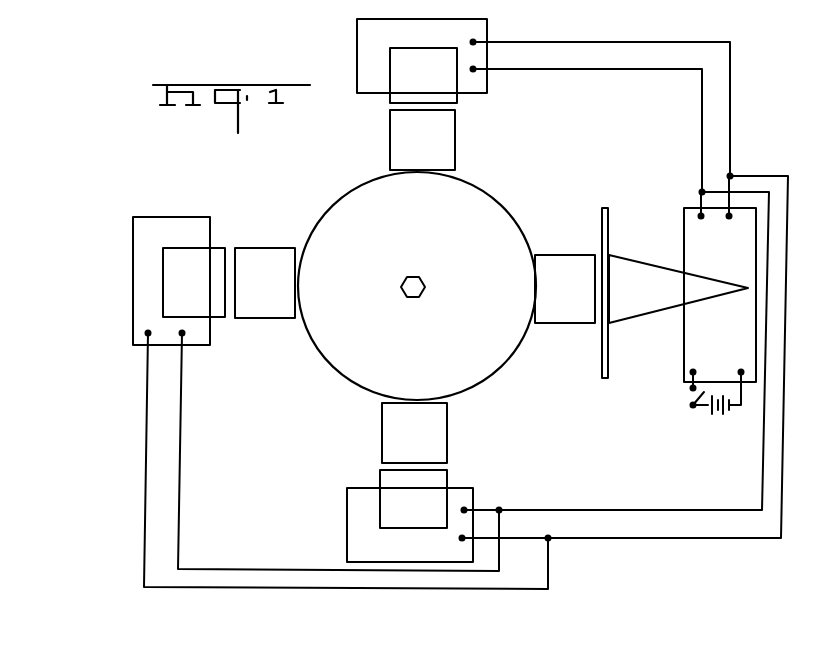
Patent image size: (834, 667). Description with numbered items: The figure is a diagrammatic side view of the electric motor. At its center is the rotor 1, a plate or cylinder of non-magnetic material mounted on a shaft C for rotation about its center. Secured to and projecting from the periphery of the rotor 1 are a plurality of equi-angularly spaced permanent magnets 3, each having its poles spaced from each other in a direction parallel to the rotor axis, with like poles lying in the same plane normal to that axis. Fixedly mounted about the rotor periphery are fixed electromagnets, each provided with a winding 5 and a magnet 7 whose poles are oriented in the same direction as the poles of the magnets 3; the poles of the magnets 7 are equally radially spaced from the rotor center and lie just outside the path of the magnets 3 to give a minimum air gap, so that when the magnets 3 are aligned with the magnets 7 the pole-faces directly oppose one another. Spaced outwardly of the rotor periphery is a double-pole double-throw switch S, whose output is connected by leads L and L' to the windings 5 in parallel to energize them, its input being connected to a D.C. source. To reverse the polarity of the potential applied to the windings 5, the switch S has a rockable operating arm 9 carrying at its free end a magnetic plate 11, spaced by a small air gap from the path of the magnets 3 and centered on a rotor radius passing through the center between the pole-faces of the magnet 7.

The rotor 1 is at (503, 204).
The permanent magnets 3 is at (452, 150).
The winding 5 is at (344, 87).
The magnet 7 is at (405, 90).
The rockable operating arm 9 is at (645, 274).
The magnetic plate 11 is at (610, 222).
The shaft C is at (426, 286).
The double-pole double-throw switch S is at (720, 295).
The inner line L is at (473, 320).
The outer line L' is at (466, 315).